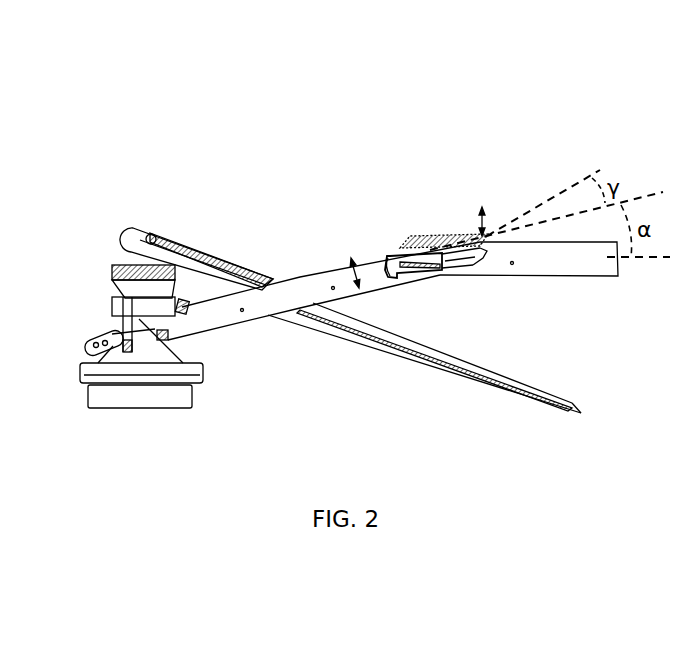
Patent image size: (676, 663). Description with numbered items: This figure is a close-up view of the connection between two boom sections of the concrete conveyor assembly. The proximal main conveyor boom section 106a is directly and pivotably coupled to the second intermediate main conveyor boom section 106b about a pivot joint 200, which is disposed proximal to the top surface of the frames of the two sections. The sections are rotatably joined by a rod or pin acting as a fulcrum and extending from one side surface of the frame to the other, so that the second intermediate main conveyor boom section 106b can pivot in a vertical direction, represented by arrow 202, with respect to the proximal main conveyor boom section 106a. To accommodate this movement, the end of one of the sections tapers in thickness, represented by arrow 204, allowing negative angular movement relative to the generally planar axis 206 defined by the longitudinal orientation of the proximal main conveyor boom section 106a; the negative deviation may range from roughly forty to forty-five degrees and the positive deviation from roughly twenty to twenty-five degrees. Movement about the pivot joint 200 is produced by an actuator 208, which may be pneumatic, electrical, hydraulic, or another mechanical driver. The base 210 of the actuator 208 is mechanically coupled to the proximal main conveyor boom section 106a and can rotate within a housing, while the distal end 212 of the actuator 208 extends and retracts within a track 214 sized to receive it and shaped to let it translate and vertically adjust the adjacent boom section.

The proximal main conveyor boom section 106a is at (297, 282).
The second intermediate main conveyor boom section 106b is at (562, 262).
The pivot joint 200 is at (439, 231).
The arrow 202 is at (485, 221).
The arrow 204 is at (364, 272).
The generally planar axis 206 is at (650, 192).
The actuator 208 is at (410, 263).
The base of the actuator 210 is at (379, 257).
The distal end of the actuator 212 is at (472, 275).
The track 214 is at (490, 258).